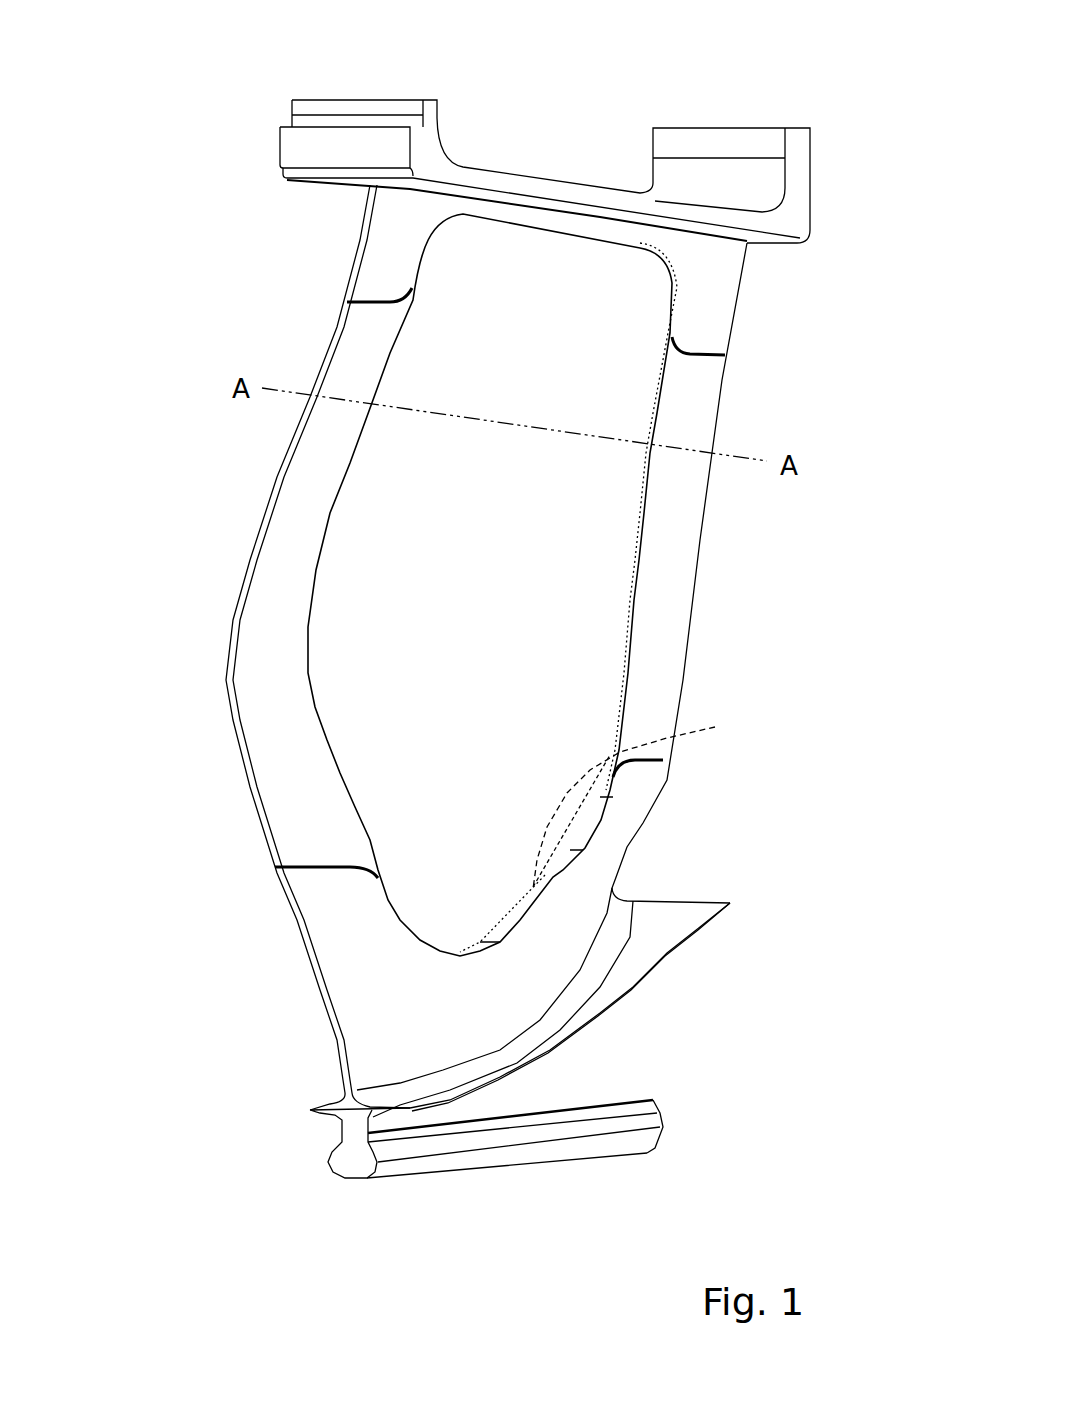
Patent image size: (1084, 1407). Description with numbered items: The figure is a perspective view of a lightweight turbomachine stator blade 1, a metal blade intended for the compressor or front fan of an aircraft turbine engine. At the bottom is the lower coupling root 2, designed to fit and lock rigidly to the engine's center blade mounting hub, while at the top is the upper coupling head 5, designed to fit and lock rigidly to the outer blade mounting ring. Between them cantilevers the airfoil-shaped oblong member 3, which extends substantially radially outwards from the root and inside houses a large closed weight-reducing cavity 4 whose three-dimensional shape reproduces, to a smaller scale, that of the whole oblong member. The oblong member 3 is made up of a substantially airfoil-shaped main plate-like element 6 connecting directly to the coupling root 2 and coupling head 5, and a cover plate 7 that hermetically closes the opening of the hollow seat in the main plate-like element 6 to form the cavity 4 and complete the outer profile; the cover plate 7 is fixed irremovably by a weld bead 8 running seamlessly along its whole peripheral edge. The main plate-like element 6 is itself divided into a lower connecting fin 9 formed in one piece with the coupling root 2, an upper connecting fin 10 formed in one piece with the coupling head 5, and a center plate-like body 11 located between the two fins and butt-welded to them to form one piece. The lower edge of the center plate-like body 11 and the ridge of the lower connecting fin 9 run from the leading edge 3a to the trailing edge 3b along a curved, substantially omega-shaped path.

The lightweight turbomachine stator blade 1 is at (227, 110).
The lower coupling root 2 is at (517, 1157).
The airfoil-shaped oblong member 3 is at (447, 895).
The leading edge 3a is at (340, 329).
The trailing edge 3b is at (720, 400).
The weight-reducing cavity 4 is at (533, 889).
The upper coupling head 5 is at (534, 185).
The main plate-like element 6 is at (256, 815).
The cover plate 7 is at (577, 287).
The weld bead 8 is at (560, 230).
The lower connecting fin 9 is at (353, 1007).
The upper connecting fin 10 is at (363, 242).
The center plate-like body 11 is at (270, 592).